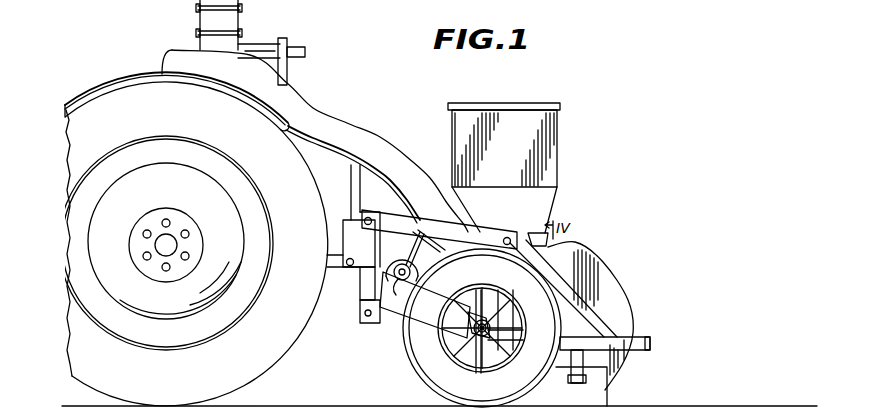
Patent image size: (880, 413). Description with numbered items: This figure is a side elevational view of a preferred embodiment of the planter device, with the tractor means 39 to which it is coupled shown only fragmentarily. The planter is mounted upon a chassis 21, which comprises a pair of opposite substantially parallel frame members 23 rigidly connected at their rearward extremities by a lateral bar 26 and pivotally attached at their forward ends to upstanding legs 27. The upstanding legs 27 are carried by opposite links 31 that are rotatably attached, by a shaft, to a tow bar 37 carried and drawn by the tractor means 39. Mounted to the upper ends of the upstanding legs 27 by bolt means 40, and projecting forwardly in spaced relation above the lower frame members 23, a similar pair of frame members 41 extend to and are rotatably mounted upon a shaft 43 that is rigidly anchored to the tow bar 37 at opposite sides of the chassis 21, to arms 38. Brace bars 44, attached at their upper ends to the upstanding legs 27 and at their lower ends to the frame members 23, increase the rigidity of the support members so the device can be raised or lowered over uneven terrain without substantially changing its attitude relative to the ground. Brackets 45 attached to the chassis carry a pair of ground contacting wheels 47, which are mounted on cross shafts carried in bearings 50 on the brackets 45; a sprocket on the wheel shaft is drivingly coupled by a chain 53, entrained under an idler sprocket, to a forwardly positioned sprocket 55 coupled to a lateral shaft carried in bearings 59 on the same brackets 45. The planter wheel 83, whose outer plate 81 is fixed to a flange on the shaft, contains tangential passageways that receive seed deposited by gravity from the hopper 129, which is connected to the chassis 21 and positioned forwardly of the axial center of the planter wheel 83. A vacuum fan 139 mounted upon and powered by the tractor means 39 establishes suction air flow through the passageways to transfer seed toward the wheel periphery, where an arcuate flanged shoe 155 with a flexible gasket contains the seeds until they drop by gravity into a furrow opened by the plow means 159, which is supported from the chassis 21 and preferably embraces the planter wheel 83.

The chassis 21 is at (716, 351).
The frame member 23 is at (636, 345).
The lateral bar 26 is at (650, 351).
The upstanding leg 27 is at (499, 294).
The link 31 is at (390, 322).
The tow bar 37 is at (363, 279).
The arm 38 is at (370, 250).
The tractor means 39 is at (108, 82).
The bolt means 40 is at (503, 241).
The frame member 41 is at (443, 227).
The shaft 43 is at (369, 217).
The brace bar 44 is at (541, 268).
The bracket 45 is at (421, 297).
The ground contacting wheel 47 is at (418, 358).
The bearing 50 is at (474, 324).
The chain 53 is at (404, 264).
The sprocket 55 is at (420, 270).
The bearing 59 is at (396, 281).
The outer plate 81 is at (589, 266).
The planter wheel 83 is at (638, 265).
The hopper 129 is at (550, 126).
The vacuum fan 139 is at (228, 23).
The arcuate flanged shoe 155 is at (531, 237).
The plow means 159 is at (598, 393).